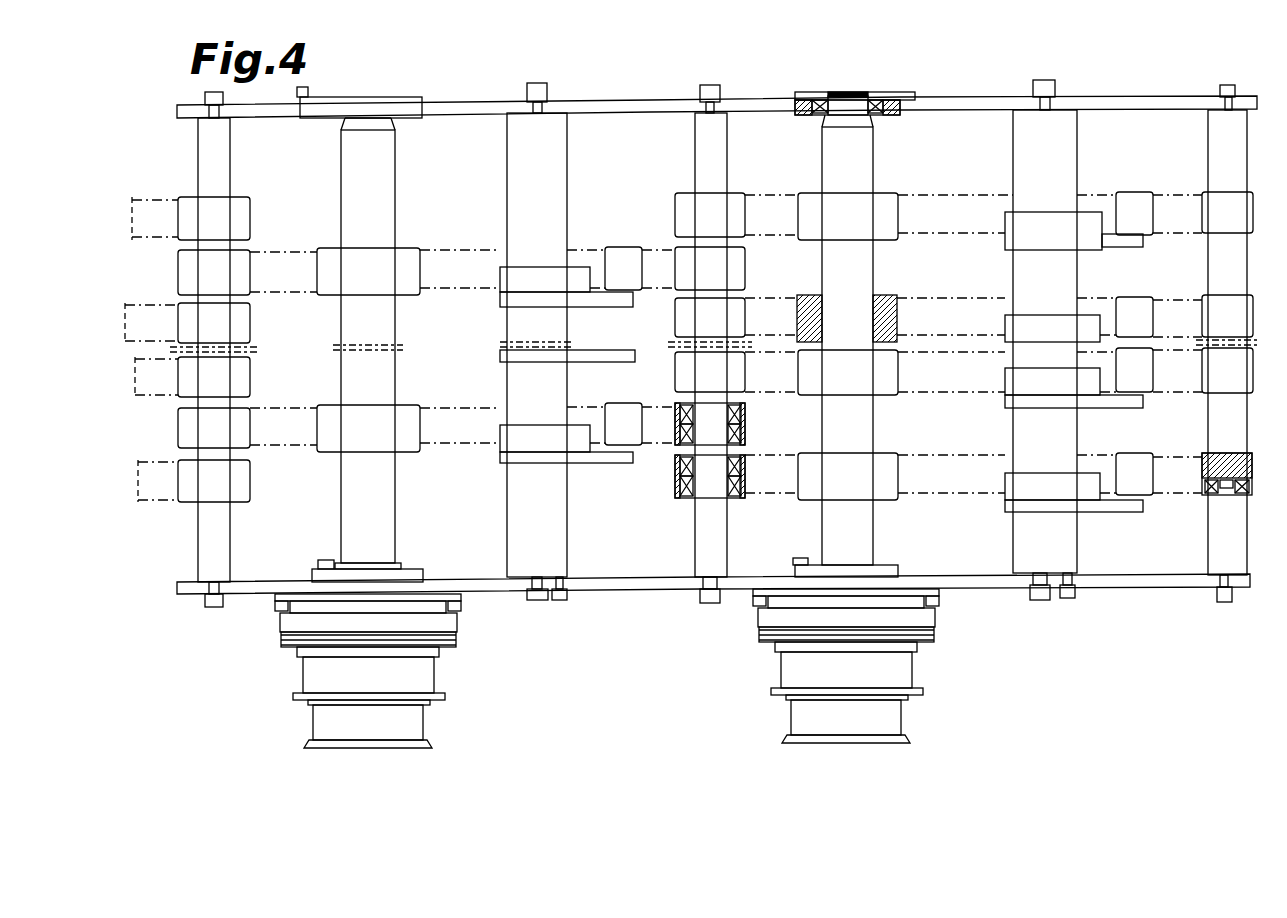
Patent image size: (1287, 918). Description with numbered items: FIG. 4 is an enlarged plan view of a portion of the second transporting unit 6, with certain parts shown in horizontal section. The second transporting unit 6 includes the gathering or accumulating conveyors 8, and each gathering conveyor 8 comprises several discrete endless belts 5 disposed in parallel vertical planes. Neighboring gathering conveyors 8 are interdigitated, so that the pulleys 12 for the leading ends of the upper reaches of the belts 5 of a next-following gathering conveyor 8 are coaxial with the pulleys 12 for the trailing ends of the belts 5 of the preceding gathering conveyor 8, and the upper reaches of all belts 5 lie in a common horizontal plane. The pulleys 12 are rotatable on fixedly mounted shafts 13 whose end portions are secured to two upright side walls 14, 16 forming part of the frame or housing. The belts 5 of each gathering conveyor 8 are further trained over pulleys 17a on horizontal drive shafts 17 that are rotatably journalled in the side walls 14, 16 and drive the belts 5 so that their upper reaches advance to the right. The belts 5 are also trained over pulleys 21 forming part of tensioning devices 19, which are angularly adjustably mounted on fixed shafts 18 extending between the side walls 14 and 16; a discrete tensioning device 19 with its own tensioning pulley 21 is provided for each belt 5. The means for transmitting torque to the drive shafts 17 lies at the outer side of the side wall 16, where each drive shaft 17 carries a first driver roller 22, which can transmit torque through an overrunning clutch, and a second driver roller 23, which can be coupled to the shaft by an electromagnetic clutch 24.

The endless belt 5 is at (287, 440).
The second transporting unit 6 is at (834, 64).
The gathering conveyor 8 is at (694, 668).
The pulley 12 is at (192, 490).
The shaft 13 is at (205, 557).
The side wall 14 is at (643, 107).
The side wall 16 is at (578, 596).
The drive shaft 17 is at (387, 172).
The pulley 17a is at (402, 258).
The fixed shaft 18 is at (545, 140).
The tensioning device 19 is at (502, 282).
The pulley 21 is at (615, 257).
The first driver roller 22 is at (420, 727).
The second driver roller 23 is at (435, 672).
The electromagnetic clutch 24 is at (467, 627).